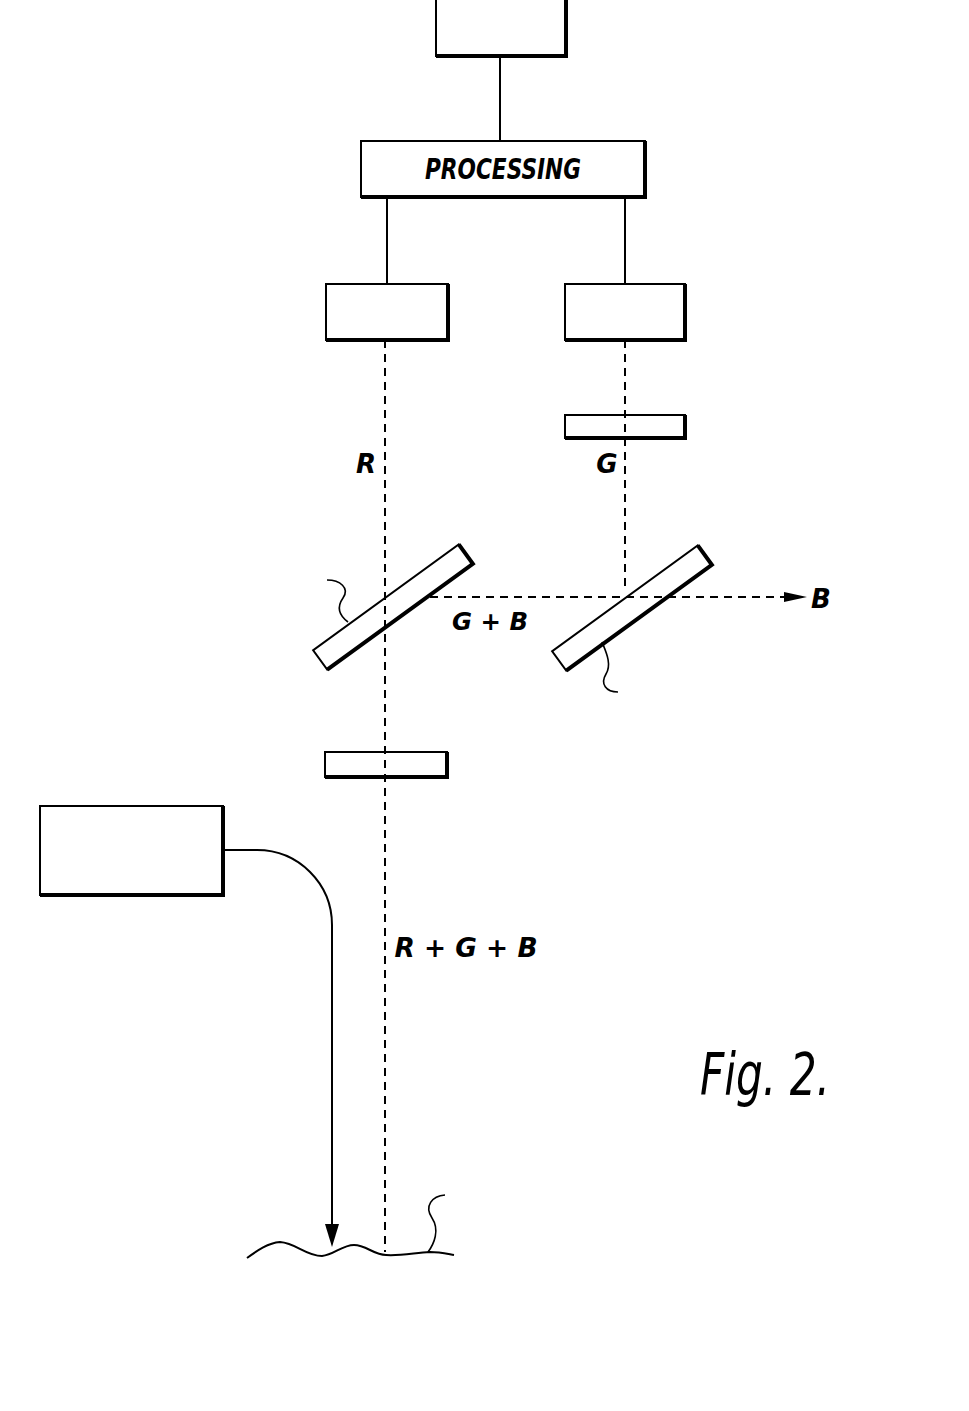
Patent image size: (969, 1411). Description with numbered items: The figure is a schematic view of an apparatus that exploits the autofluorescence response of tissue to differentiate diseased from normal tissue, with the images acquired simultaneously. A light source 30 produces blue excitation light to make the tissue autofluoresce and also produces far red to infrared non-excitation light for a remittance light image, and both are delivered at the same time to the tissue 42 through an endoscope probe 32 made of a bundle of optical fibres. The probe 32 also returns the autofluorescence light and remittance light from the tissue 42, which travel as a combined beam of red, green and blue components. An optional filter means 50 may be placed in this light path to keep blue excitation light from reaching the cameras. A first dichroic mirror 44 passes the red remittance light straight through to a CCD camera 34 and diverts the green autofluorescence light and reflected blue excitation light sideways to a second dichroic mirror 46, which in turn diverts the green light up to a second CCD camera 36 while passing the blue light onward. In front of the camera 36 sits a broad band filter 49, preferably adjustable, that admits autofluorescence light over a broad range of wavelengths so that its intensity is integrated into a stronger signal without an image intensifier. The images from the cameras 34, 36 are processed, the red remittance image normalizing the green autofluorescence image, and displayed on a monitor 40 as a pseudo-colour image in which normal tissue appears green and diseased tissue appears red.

The light source 30 is at (185, 806).
The endoscope probe 32 is at (331, 1043).
The CCD camera 34 is at (339, 284).
The CCD camera 36 is at (670, 284).
The monitor 40 is at (567, 26).
The tissue 42 is at (279, 1242).
The first dichroic mirror 44 is at (448, 545).
The second dichroic mirror 46 is at (688, 545).
The broad band filter 49 is at (661, 415).
The filter means 50 is at (422, 752).